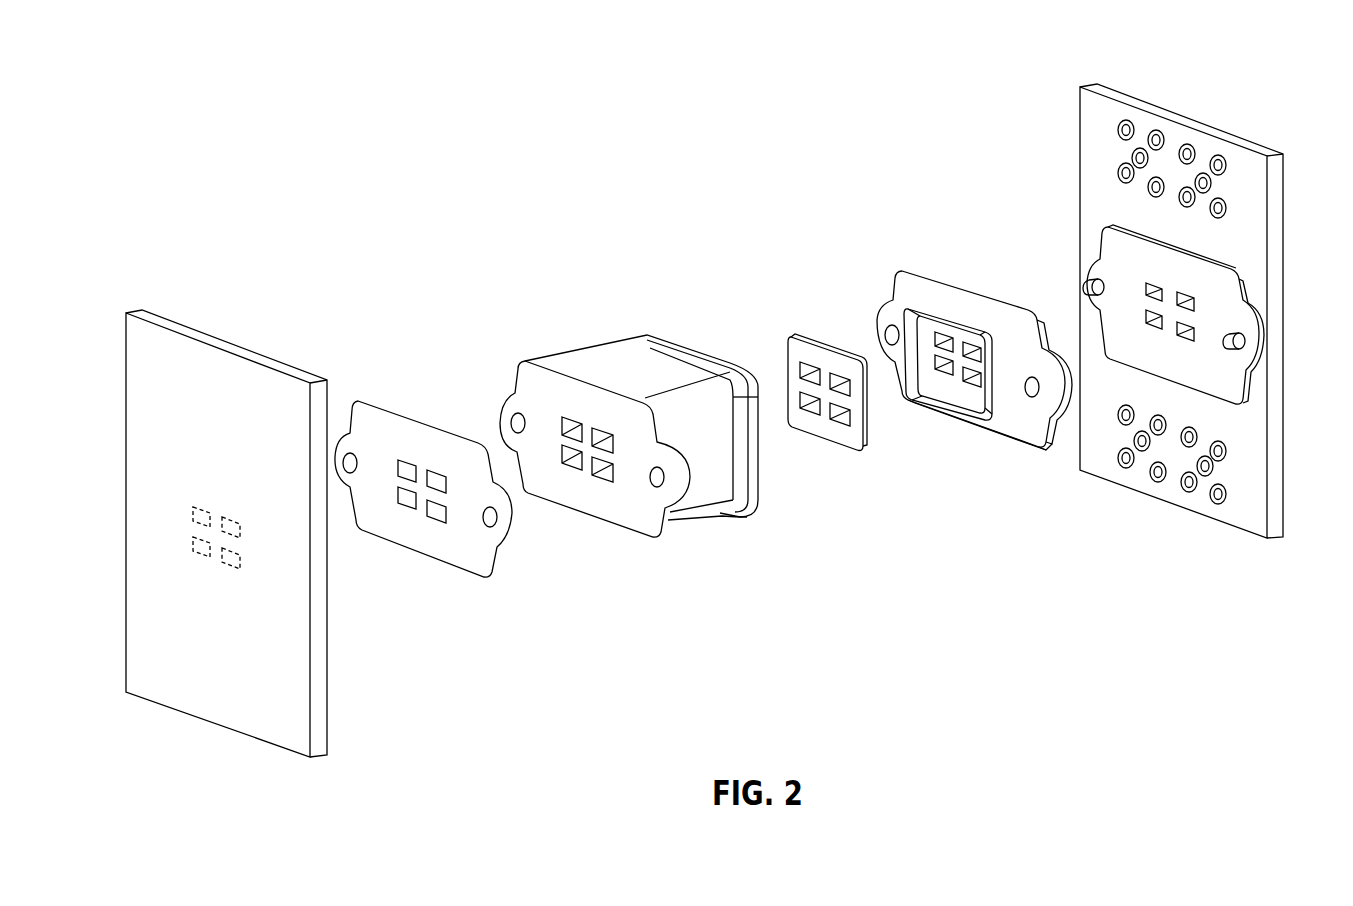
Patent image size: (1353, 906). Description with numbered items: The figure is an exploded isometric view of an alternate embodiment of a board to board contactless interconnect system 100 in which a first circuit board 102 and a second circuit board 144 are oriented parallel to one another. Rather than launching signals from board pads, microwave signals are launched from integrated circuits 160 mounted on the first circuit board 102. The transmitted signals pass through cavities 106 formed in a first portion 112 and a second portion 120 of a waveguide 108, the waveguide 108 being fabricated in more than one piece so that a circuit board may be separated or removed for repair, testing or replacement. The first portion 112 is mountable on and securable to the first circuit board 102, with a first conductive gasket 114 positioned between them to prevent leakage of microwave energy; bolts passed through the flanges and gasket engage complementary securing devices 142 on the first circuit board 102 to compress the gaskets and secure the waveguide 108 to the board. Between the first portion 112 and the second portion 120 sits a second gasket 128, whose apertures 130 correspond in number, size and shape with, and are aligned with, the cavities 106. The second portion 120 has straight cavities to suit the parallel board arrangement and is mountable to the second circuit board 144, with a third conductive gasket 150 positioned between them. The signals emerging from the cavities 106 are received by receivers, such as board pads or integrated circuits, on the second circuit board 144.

The board to board contactless interconnect system 100 is at (695, 160).
The first circuit board 102 is at (1080, 112).
The cavities 106 is at (563, 442).
The waveguide 108 is at (1067, 497).
The first portion 112 is at (905, 272).
The first conductive gasket 114 is at (1111, 242).
The second portion 120 is at (595, 350).
The second gasket 128 is at (795, 337).
The apertures 130 is at (793, 408).
The complementary securing devices 142 is at (1240, 352).
The second circuit board 144 is at (180, 323).
The third conductive gasket 150 is at (422, 422).
The integrated circuits 160 is at (1177, 337).